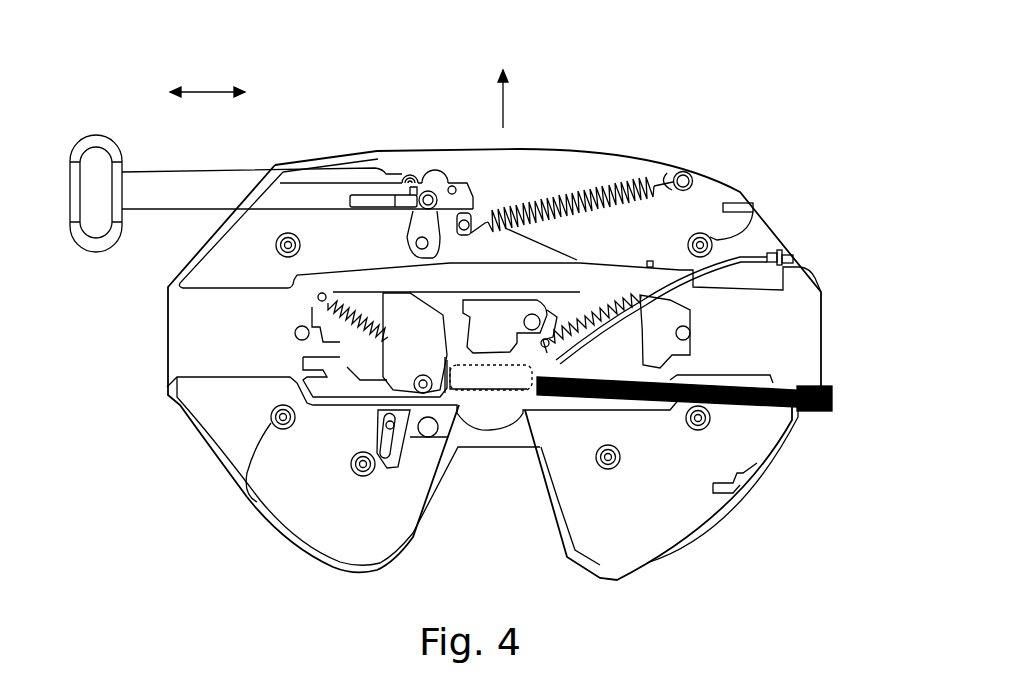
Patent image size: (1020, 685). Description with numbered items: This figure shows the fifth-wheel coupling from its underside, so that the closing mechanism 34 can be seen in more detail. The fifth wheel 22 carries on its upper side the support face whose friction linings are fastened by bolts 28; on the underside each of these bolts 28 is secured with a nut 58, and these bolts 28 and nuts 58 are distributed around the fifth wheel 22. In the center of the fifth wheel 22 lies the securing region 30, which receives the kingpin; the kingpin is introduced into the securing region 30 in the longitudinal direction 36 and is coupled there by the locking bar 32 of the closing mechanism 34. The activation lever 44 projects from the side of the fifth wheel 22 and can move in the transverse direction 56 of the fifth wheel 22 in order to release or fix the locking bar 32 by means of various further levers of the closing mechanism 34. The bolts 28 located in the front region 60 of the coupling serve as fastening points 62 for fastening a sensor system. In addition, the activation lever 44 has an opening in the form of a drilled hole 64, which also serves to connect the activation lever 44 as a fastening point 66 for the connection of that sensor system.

The fifth wheel 22 is at (817, 273).
The bolts 28 is at (402, 172).
The securing region 30 is at (497, 330).
The locking bar 32 is at (488, 382).
The closing mechanism 34 is at (358, 422).
The longitudinal direction 36 is at (505, 100).
The activation lever 44 is at (167, 187).
The transverse direction 56 is at (204, 92).
The nut 58 is at (420, 172).
The front region 60 is at (805, 222).
The fastening points 62 is at (288, 232).
The drilled hole 64 is at (470, 182).
The fastening point 66 is at (453, 171).